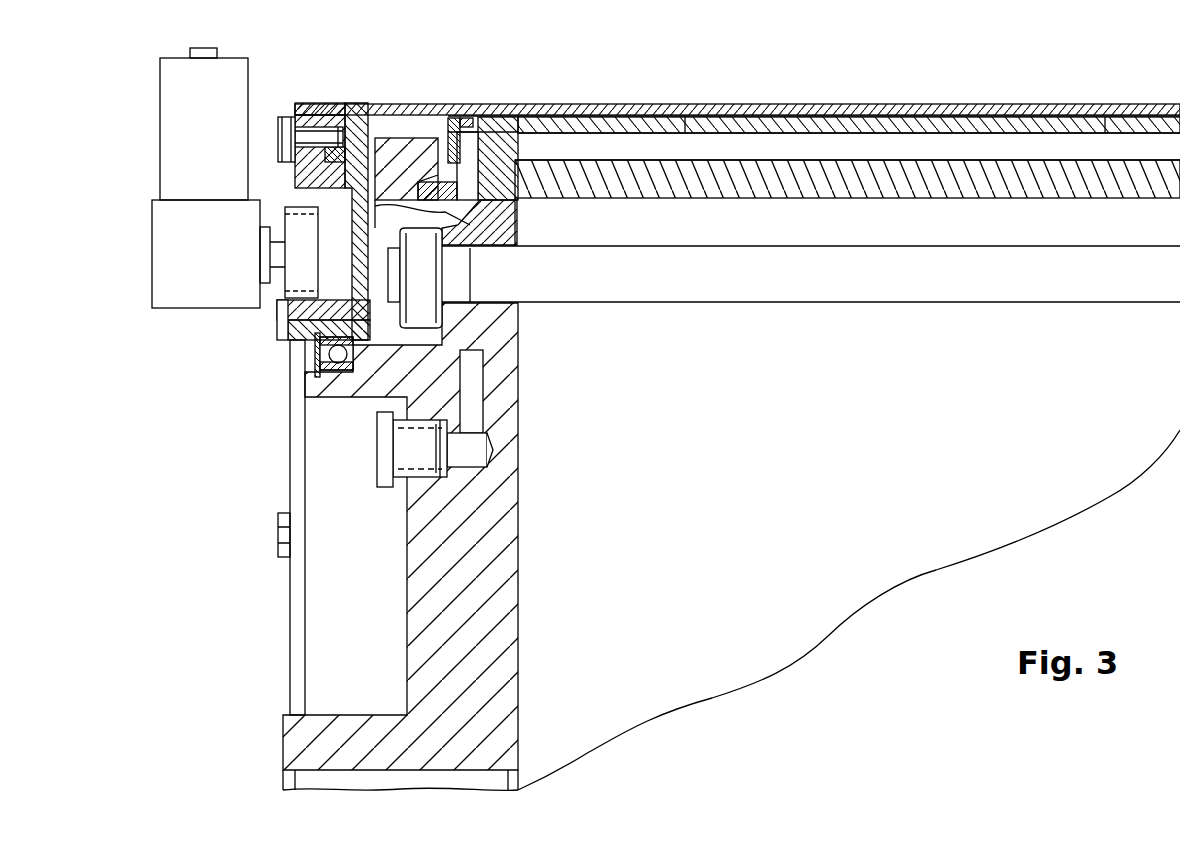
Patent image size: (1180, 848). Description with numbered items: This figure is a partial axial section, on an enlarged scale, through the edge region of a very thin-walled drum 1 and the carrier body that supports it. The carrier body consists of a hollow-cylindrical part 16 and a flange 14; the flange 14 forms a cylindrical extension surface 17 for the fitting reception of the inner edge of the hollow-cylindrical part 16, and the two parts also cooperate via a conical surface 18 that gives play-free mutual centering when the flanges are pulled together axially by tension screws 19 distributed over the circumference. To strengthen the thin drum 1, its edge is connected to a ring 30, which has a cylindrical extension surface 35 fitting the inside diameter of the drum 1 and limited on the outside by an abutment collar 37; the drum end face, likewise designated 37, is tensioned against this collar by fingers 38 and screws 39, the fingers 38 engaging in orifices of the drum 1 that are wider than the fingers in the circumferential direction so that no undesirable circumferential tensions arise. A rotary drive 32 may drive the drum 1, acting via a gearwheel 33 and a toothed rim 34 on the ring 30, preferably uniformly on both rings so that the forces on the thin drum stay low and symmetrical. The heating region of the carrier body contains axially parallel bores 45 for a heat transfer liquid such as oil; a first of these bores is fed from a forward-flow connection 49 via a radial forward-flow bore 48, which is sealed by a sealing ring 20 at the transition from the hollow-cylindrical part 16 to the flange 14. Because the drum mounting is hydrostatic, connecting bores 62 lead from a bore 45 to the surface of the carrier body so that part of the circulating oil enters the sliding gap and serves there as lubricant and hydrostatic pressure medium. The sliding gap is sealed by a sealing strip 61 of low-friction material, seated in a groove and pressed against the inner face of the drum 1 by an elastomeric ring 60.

The drum 1 is at (550, 105).
The flange 14 is at (500, 622).
The hollow-cylindrical part 16 is at (658, 175).
The cylindrical extension surface 17 is at (522, 195).
The conical surface 18 is at (428, 180).
The tension screw 19 is at (735, 285).
The sealing ring 20 is at (488, 195).
The ring 30 is at (302, 110).
The rotary drive 32 is at (218, 123).
The gearwheel 33 is at (293, 283).
The toothed rim 34 is at (297, 305).
The cylindrical extension surface 35 is at (356, 110).
The abutment collar 37 is at (318, 110).
The finger 38 is at (348, 110).
The screw 39 is at (285, 135).
The axially parallel bore 45 is at (578, 148).
The radial forward-flow bore 48 is at (470, 412).
The forward-flow connection 49 is at (385, 448).
The elastomeric ring 60 is at (465, 120).
The sealing strip 61 is at (466, 118).
The connecting bore 62 is at (690, 123).